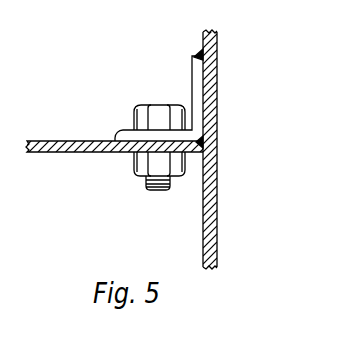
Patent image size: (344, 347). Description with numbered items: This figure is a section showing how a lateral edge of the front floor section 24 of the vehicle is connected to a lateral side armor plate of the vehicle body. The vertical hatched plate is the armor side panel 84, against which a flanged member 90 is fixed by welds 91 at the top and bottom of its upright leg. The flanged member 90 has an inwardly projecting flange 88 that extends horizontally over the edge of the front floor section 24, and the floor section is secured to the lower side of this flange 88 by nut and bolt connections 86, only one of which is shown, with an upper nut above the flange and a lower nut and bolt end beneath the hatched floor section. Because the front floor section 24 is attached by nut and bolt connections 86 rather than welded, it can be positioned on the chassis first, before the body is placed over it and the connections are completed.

The front floor section 24 is at (63, 151).
The armor side panel 84 is at (252, 99).
The nut and bolt connections 86 is at (136, 170).
The inwardly projecting flange 88 is at (123, 130).
The flanged member 90 is at (218, 118).
The welds 91 is at (199, 56).